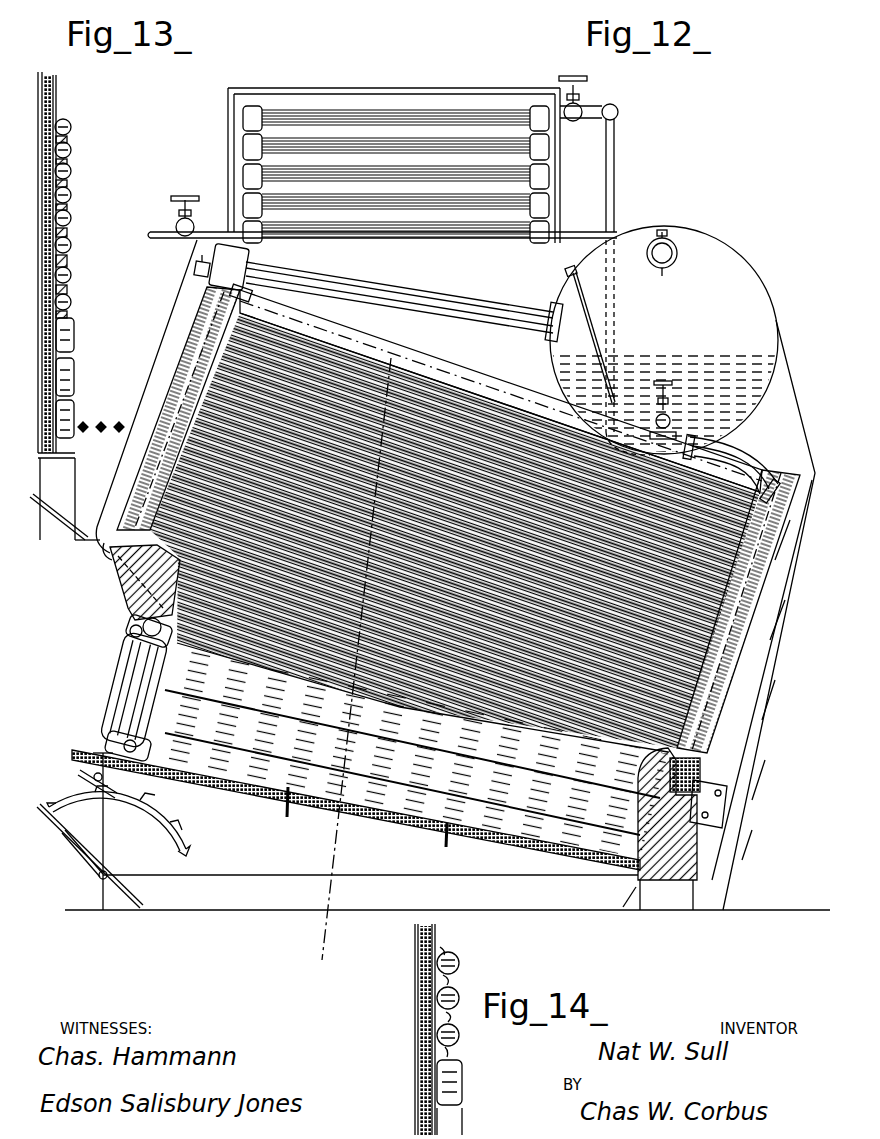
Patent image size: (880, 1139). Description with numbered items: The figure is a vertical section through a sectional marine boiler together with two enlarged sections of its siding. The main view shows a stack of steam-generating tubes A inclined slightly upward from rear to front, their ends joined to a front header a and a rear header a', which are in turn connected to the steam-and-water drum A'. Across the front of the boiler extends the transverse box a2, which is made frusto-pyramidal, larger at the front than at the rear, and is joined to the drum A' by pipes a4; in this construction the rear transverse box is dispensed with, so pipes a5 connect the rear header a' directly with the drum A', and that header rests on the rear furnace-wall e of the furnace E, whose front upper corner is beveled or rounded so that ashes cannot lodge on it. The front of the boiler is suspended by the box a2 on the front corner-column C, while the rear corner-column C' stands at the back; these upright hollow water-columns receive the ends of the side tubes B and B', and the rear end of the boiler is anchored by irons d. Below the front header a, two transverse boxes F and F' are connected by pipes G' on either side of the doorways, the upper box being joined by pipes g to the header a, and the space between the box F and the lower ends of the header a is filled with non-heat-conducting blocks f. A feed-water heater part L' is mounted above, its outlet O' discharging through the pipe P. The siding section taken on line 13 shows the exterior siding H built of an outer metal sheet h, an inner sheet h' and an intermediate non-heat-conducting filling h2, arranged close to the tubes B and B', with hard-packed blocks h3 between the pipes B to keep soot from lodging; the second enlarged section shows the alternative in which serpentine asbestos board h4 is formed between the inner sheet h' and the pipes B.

In FIG. 13, the outer sheet h is at (36, 260).
In FIG. 14, the outer sheet h is at (403, 1028).
In FIG. 13, the intermediate filling h2 is at (50, 98).
In FIG. 14, the intermediate filling h2 is at (427, 1023).
In FIG. 13, the inner sheet h' is at (73, 264).
In FIG. 14, the inner sheet h' is at (449, 1025).
In FIG. 13, the blocks or filling-pieces h3 is at (69, 140).
In FIG. 14, the serpentine asbestos board h4 is at (455, 945).
In FIG. 12, the side tubes B is at (134, 619).
In FIG. 13, the side tubes B is at (71, 214).
In FIG. 14, the side tubes B is at (455, 999).
In FIG. 13, the exterior siding H is at (46, 257).
In FIG. 14, the exterior siding H is at (416, 1040).
In FIG. 12, the side tubes B' is at (412, 761).
In FIG. 13, the side tubes B' is at (78, 378).
In FIG. 14, the side tubes B' is at (464, 1097).
In FIG. 12, the feed-water heater part L' is at (383, 155).
In FIG. 12, the tube connectors i' is at (397, 174).
In FIG. 12, the header tubes i is at (396, 181).
In FIG. 12, the outlet O' is at (585, 113).
In FIG. 12, the discharge pipe P is at (628, 287).
In FIG. 12, the steam-and-water drum A' is at (664, 340).
In FIG. 12, the front transverse box a2 is at (223, 272).
In FIG. 12, the pipes a4 is at (479, 321).
In FIG. 12, the section line 13 is at (359, 648).
In FIG. 12, the steam-generating tubes A is at (455, 530).
In FIG. 12, the front header a is at (178, 408).
In FIG. 12, the pipes a5 is at (731, 468).
In FIG. 12, the pipes g is at (112, 562).
In FIG. 12, the non-heat-conducting blocks f is at (135, 575).
In FIG. 12, the front corner-column C is at (142, 582).
In FIG. 12, the transverse box F' is at (130, 630).
In FIG. 12, the pipes G' is at (124, 689).
In FIG. 12, the transverse box F is at (112, 742).
In FIG. 12, the furnace E is at (416, 750).
In FIG. 12, the rear furnace-wall e is at (643, 798).
In FIG. 12, the anchor irons d is at (728, 798).
In FIG. 12, the rear header a' is at (747, 611).
In FIG. 12, the rear corner-column C' is at (771, 690).